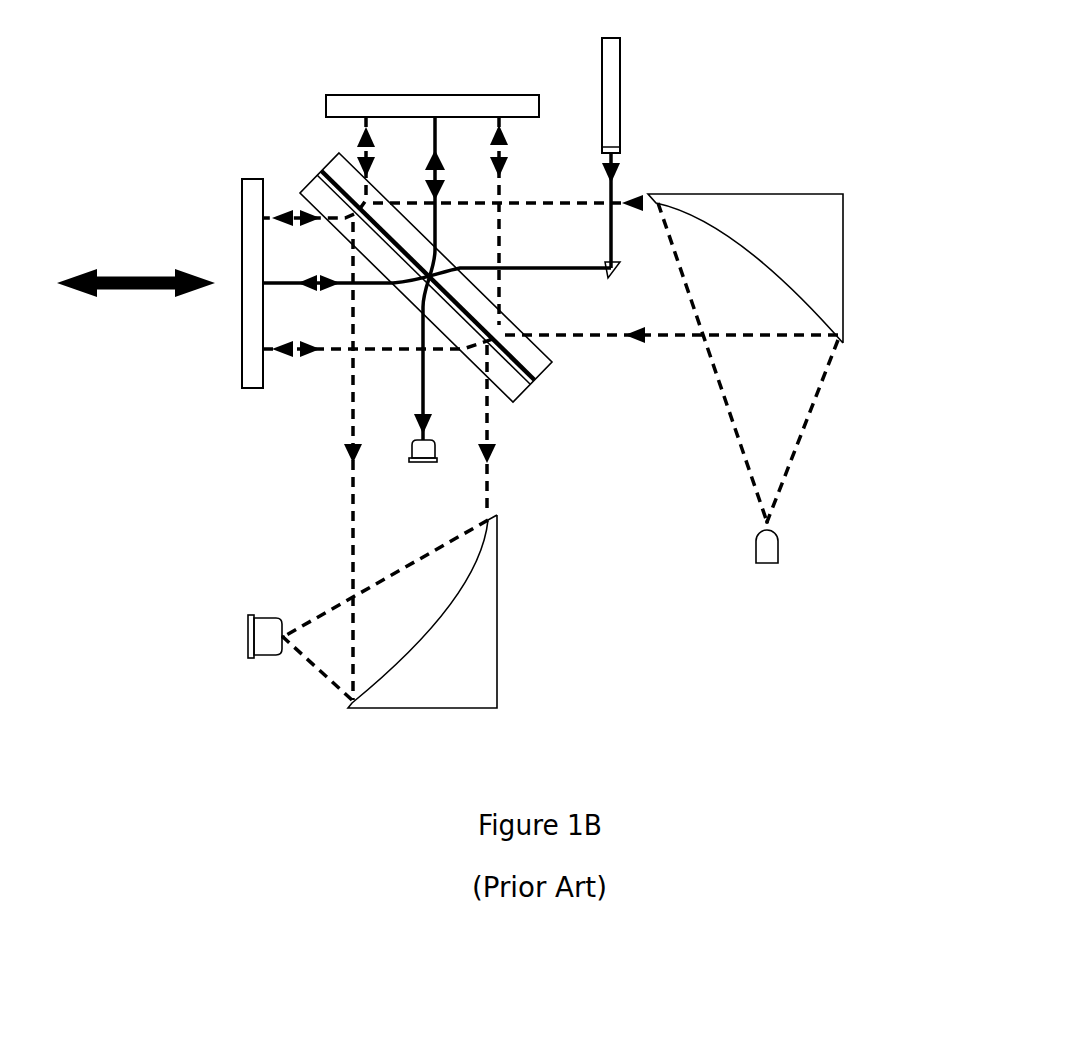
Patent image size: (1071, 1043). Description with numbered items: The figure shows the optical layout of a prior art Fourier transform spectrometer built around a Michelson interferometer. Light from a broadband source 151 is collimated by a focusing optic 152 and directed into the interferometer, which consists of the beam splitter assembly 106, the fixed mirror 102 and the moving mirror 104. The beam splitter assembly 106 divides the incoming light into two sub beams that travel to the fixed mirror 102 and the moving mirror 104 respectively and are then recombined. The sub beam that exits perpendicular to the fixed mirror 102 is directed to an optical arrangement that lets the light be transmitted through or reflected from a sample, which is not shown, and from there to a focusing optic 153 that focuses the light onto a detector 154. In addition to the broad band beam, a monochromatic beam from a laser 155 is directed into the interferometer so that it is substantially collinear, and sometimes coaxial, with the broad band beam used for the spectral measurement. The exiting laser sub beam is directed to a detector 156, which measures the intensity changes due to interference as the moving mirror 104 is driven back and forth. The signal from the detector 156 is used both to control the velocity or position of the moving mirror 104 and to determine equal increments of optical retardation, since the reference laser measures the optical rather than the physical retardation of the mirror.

The fixed mirror 102 is at (388, 95).
The moving mirror 104 is at (245, 392).
The beam splitter assembly 106 is at (320, 155).
The broadband source 151 is at (788, 550).
The focusing optic 152 is at (805, 193).
The focusing optic 153 is at (498, 672).
The detector 154 is at (243, 643).
The laser 155 is at (622, 92).
The detector 156 is at (445, 465).